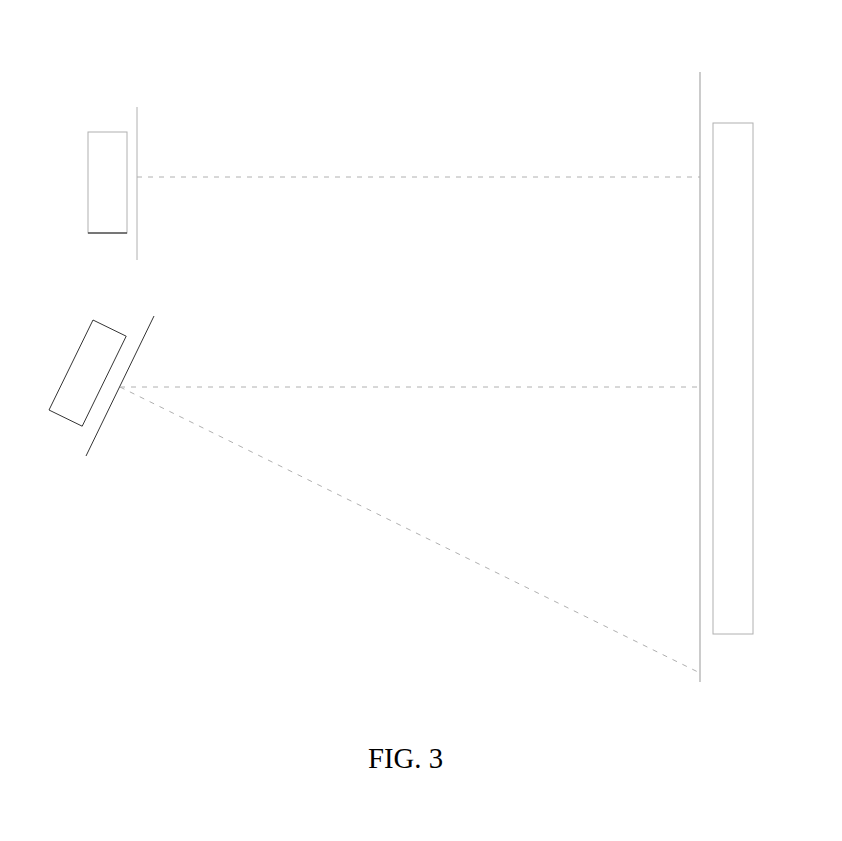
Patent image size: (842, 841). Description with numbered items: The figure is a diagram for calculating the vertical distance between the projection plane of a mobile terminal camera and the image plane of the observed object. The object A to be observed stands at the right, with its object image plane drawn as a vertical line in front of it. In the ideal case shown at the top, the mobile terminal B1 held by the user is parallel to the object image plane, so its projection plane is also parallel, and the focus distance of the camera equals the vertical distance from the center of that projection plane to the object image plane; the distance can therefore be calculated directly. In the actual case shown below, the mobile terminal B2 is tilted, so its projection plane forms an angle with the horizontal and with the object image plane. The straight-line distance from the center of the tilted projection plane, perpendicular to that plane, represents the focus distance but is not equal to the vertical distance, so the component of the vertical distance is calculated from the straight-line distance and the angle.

The mobile terminal B1 is at (85, 182).
The mobile terminal B2 is at (78, 373).
The object A is at (749, 378).